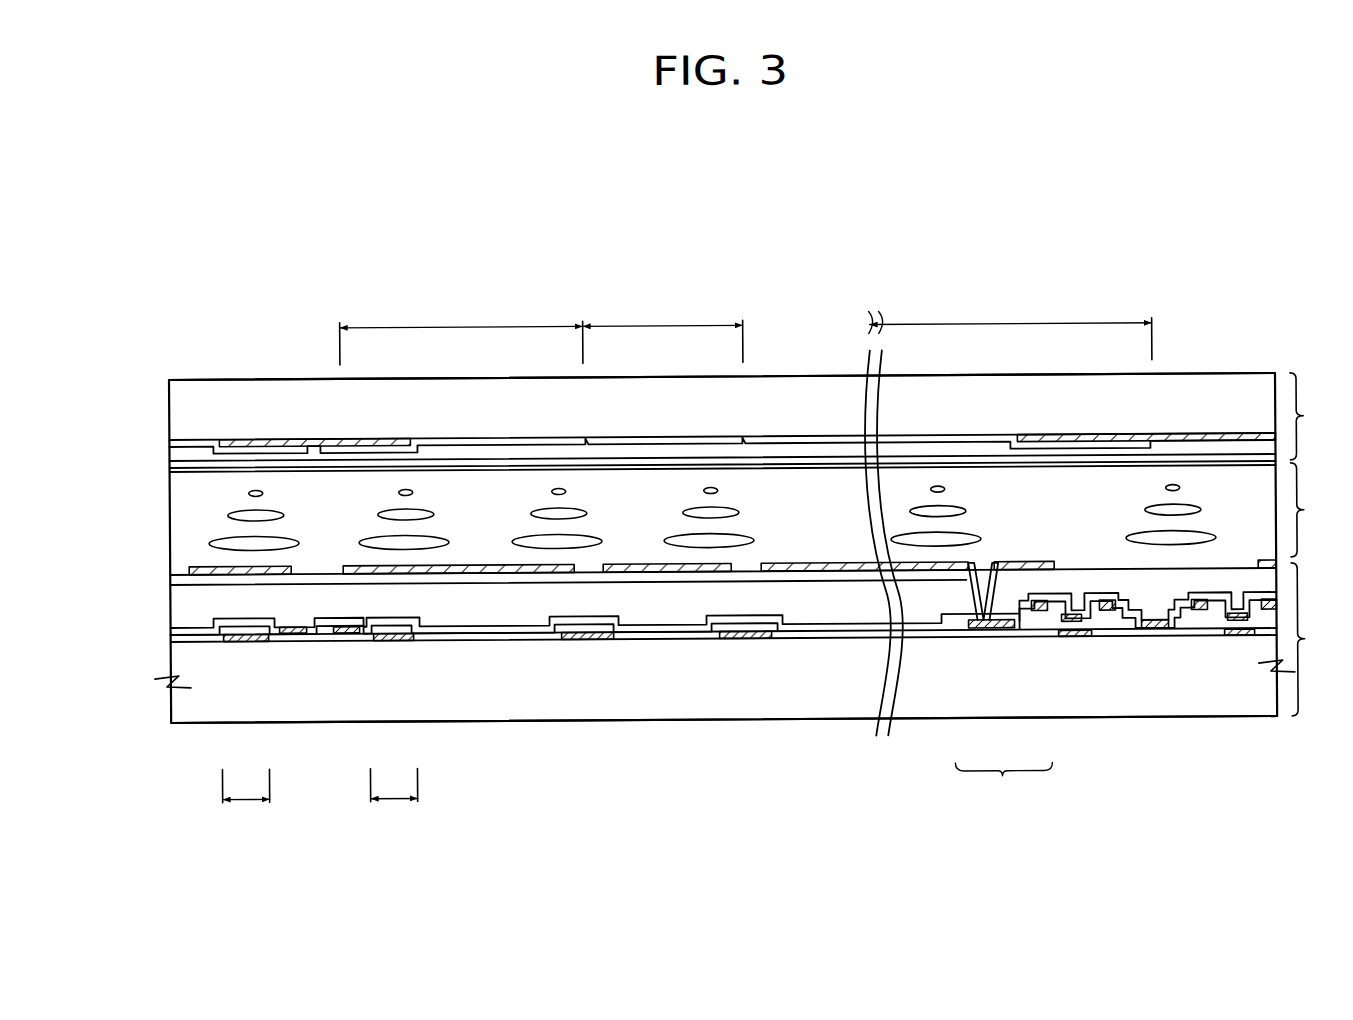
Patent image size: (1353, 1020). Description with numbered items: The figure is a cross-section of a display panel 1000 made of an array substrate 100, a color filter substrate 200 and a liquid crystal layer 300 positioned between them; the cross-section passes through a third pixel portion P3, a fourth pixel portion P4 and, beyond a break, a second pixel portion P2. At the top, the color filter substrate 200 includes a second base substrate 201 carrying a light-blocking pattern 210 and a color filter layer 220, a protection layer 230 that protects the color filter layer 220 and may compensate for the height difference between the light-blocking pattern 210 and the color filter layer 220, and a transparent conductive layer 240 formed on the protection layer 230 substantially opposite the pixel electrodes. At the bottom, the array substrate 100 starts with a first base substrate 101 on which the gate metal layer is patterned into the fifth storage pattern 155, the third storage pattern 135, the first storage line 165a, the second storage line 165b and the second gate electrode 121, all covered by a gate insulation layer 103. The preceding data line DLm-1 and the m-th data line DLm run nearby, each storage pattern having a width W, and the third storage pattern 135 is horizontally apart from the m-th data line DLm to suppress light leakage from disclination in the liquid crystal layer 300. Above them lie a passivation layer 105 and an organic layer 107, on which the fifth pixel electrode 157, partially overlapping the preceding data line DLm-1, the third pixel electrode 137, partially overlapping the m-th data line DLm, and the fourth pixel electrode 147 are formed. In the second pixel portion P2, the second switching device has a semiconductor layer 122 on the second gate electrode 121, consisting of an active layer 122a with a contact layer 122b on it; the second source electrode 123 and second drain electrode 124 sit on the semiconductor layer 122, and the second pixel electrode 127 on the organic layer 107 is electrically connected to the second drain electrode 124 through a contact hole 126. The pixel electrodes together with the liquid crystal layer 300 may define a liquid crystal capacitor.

The display panel 1000 is at (771, 217).
The second base substrate 201 is at (180, 392).
The light-blocking pattern 210 is at (228, 440).
The color filter layer 220 is at (178, 443).
The protection layer 230 is at (178, 461).
The transparent conductive layer 240 is at (178, 469).
The color filter substrate 200 is at (1316, 416).
The liquid crystal layer 300 is at (1317, 510).
The array substrate 100 is at (1317, 639).
The fifth pixel electrode 157 is at (186, 567).
The third pixel electrode 137 is at (472, 567).
The fourth pixel electrode 147 is at (639, 567).
The contact hole 126 is at (990, 576).
The second pixel electrode 127 is at (1021, 576).
The organic layer 107 is at (180, 585).
The passivation layer 105 is at (180, 629).
The gate insulation layer 103 is at (180, 645).
The first base substrate 101 is at (180, 703).
The fifth storage pattern 155 is at (243, 645).
The (m-1)-th data line DLm-1 is at (290, 636).
The m-th data line DLm is at (343, 636).
The third storage pattern 135 is at (392, 645).
The first storage line 165a is at (588, 645).
The second storage line 165b is at (748, 645).
The second drain electrode 124 is at (972, 634).
The contact layer 122b is at (1027, 622).
The active layer 122a is at (1043, 622).
The semiconductor layer 122 is at (1003, 781).
The second gate electrode 121 is at (1080, 645).
The second source electrode 123 is at (1128, 624).
The third pixel portion P3 is at (461, 313).
The fourth pixel portion P4 is at (662, 312).
The second pixel portion P2 is at (1009, 315).
The width W is at (319, 800).